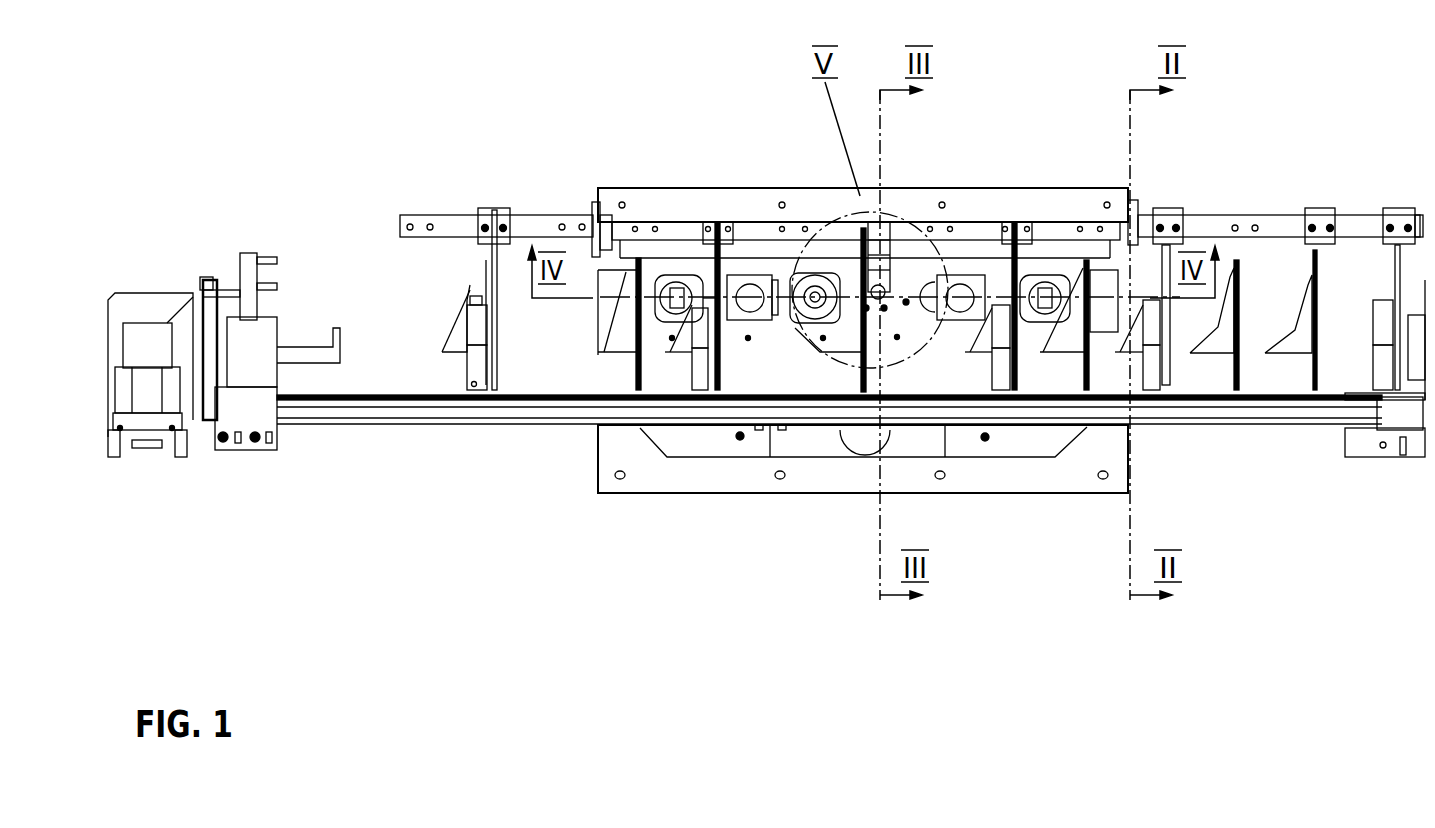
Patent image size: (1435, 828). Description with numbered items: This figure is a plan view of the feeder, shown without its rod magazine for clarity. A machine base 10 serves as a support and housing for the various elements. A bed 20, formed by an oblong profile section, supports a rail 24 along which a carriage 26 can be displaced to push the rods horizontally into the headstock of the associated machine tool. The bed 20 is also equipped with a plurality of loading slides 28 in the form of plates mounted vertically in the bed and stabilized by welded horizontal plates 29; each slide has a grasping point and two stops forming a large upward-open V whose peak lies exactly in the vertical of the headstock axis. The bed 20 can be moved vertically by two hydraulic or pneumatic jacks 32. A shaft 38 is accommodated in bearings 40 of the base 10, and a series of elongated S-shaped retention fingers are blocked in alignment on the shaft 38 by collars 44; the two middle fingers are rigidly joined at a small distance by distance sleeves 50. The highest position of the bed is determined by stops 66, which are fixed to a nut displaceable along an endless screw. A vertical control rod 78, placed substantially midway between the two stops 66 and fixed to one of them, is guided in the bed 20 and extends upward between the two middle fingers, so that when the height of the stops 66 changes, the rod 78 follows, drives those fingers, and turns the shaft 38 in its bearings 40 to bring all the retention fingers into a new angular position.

The machine base 10 is at (610, 485).
The bed 20 is at (1028, 447).
The rail 24 is at (330, 413).
The carriage 26 is at (152, 250).
The loading slides 28 is at (1310, 562).
The horizontal plates 29 is at (1210, 352).
The hydraulic or pneumatic jacks 32 is at (673, 275).
The shaft 38 is at (422, 220).
The bearings 40 is at (596, 208).
The collars 44 is at (497, 212).
The distance sleeves 50 is at (850, 272).
The stops 66 is at (757, 272).
The vertical rod 78 is at (887, 275).